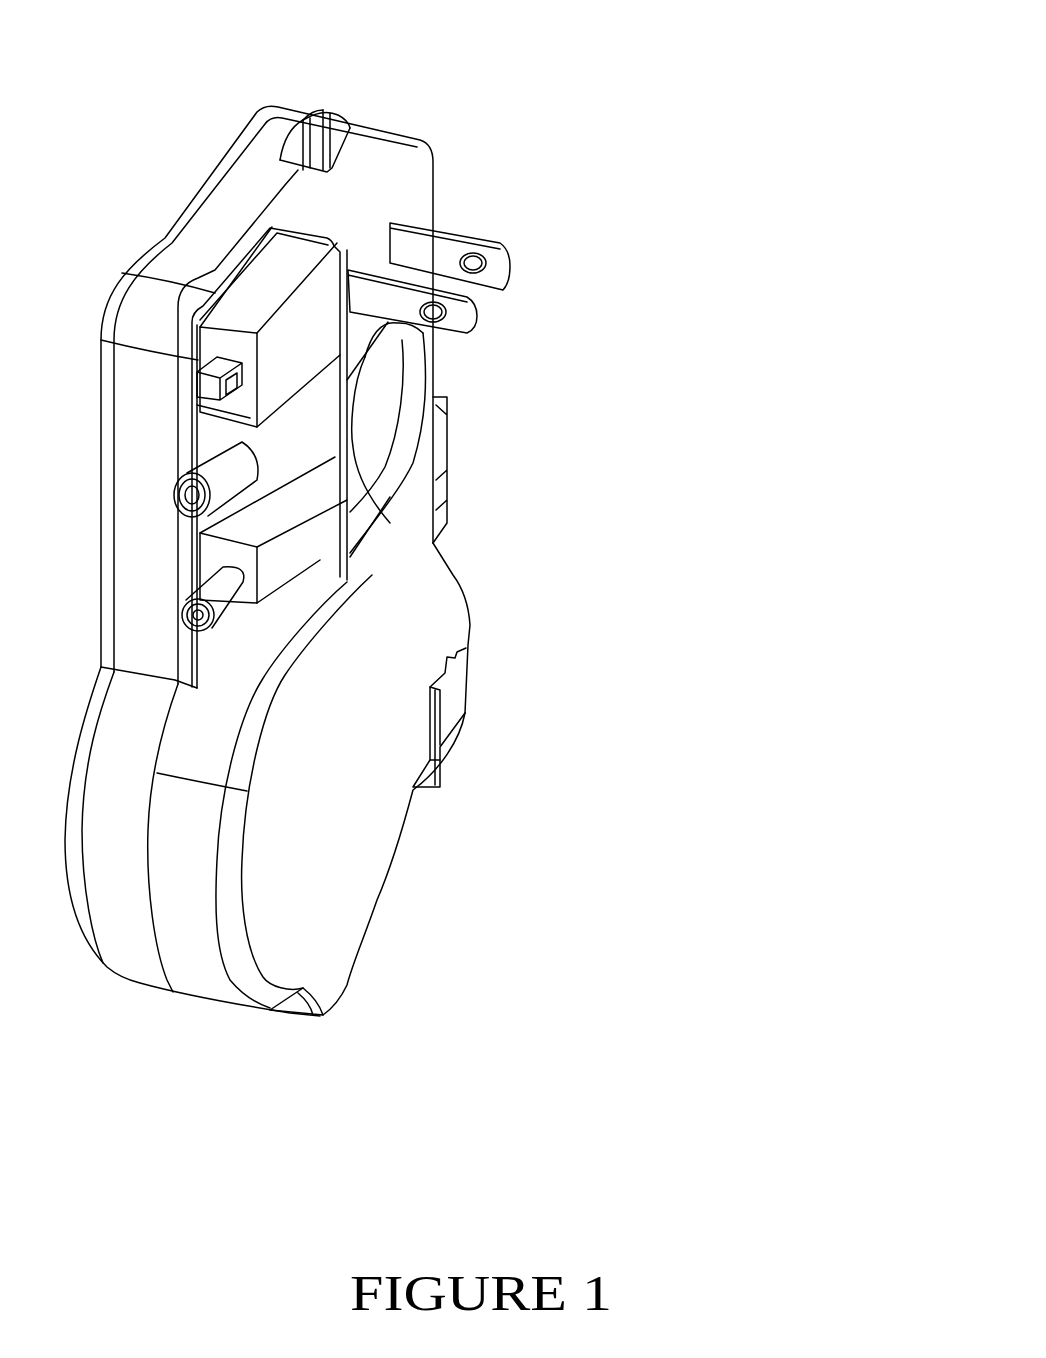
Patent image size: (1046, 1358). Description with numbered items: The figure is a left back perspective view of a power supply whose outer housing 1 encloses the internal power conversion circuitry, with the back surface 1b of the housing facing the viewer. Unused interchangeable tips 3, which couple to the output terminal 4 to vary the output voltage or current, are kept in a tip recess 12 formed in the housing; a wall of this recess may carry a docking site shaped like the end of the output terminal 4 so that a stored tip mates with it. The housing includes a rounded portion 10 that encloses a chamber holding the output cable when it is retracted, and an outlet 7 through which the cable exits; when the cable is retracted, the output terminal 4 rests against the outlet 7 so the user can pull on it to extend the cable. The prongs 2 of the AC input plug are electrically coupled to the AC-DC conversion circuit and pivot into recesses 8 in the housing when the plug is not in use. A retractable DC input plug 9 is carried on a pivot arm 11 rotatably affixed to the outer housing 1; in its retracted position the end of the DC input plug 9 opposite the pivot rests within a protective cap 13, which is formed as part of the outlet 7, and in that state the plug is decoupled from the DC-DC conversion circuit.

The outer housing 1 is at (420, 140).
The back surface 1b is at (343, 902).
The prongs 2 is at (473, 323).
The tips 3 is at (305, 527).
The output terminal 4 is at (455, 703).
The outlet 7 is at (473, 632).
The recesses 8 is at (353, 357).
The DC input plug 9 is at (440, 366).
The rounded portion 10 is at (400, 847).
The pivot arm 11 is at (345, 120).
The tip recess 12 is at (197, 650).
The protective cap 13 is at (450, 523).